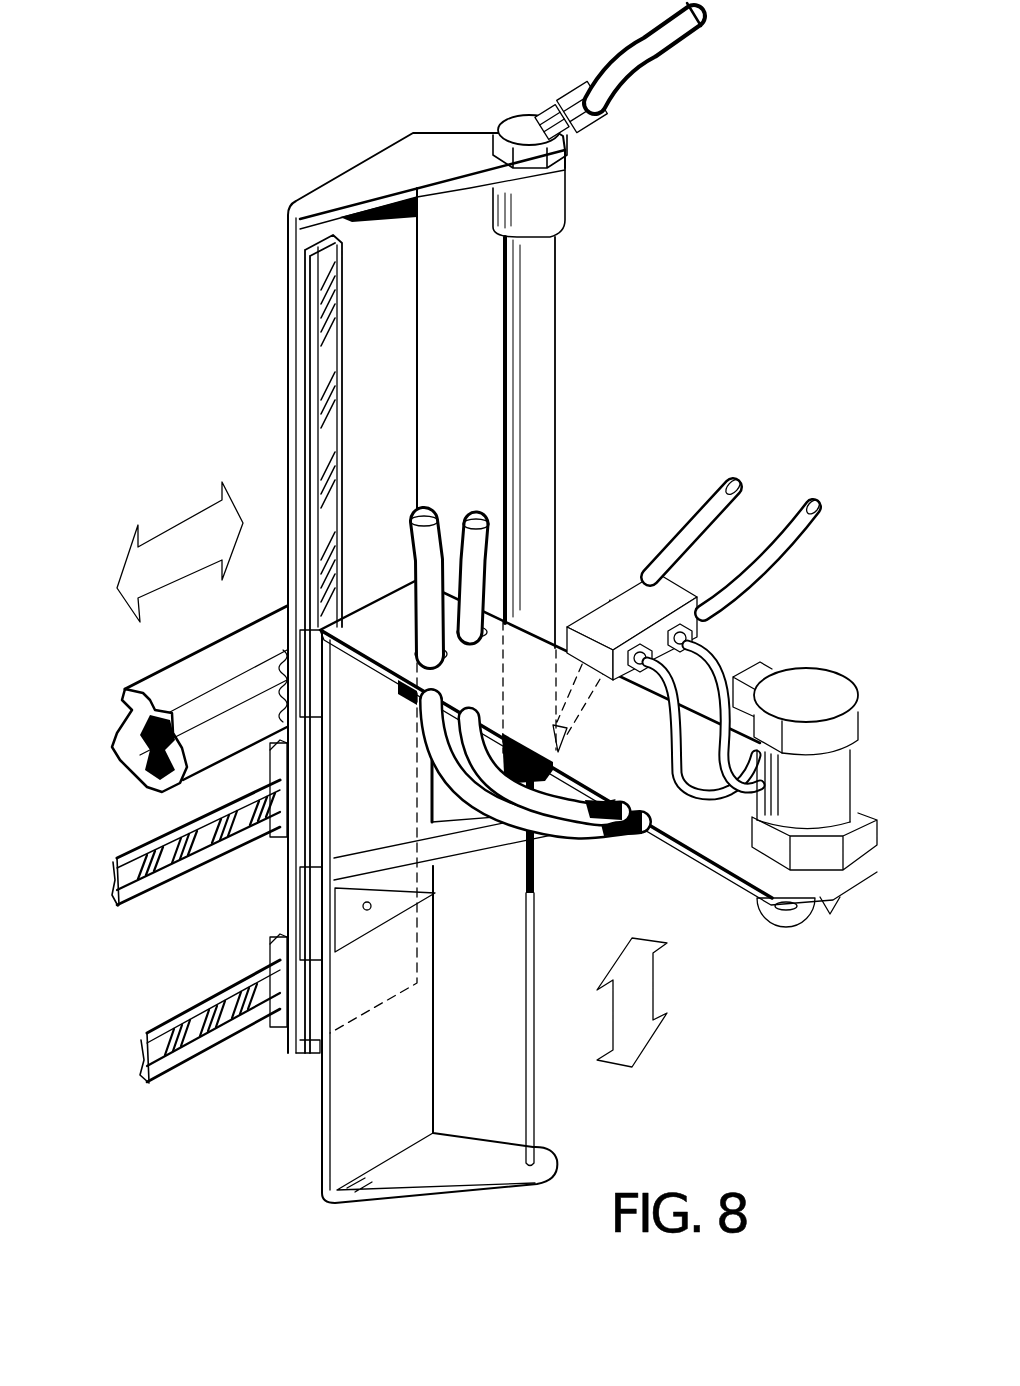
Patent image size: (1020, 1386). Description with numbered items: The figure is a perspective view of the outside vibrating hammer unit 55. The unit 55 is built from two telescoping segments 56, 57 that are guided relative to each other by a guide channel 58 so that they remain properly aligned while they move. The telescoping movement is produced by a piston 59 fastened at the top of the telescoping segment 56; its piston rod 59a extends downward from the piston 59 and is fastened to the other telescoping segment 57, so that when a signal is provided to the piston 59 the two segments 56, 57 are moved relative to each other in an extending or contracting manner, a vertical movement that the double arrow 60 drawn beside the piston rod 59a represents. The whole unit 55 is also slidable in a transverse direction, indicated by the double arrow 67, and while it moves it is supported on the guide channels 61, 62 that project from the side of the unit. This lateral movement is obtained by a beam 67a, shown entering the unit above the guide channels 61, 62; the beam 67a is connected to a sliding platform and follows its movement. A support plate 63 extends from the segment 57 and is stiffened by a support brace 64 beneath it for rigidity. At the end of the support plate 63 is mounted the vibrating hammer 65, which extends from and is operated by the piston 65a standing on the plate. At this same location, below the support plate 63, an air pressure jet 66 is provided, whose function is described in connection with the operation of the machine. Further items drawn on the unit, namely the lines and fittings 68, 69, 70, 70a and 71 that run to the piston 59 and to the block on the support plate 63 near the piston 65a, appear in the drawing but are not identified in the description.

The outside vibrating hammer unit 55 is at (366, 187).
The telescoping segment 56 is at (288, 279).
The telescoping segment 57 is at (325, 1098).
The guide channel 58 is at (325, 340).
The piston 59 is at (548, 290).
The piston rod 59a is at (535, 1083).
The vertical movement arrow 60 is at (650, 987).
The guide channel 61 is at (147, 853).
The guide channel 62 is at (177, 1027).
The support plate 63 is at (632, 748).
The support brace 64 is at (492, 858).
The pressure pad 65 is at (787, 927).
The piston 65a is at (837, 686).
The air pressure jet 66 is at (837, 907).
The double arrow 67 is at (172, 533).
The beam 67a is at (185, 670).
The air hose 68 is at (443, 524).
The air hose 69 is at (488, 528).
The air supply hose 70 is at (655, 42).
The manifold block 70a is at (668, 540).
The air hose 71 is at (773, 537).